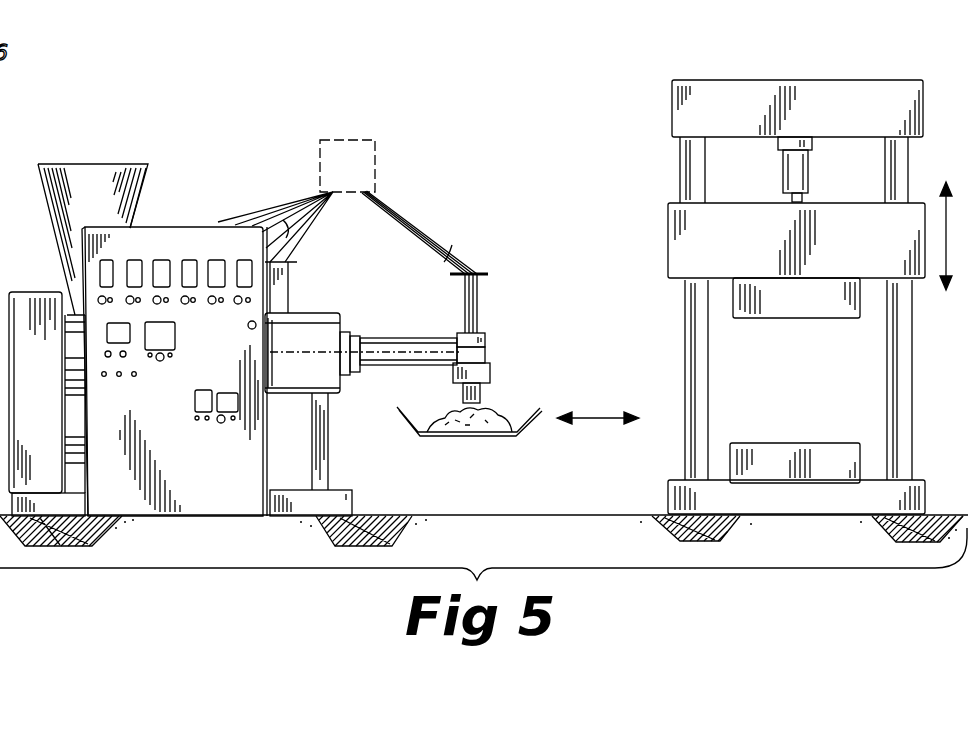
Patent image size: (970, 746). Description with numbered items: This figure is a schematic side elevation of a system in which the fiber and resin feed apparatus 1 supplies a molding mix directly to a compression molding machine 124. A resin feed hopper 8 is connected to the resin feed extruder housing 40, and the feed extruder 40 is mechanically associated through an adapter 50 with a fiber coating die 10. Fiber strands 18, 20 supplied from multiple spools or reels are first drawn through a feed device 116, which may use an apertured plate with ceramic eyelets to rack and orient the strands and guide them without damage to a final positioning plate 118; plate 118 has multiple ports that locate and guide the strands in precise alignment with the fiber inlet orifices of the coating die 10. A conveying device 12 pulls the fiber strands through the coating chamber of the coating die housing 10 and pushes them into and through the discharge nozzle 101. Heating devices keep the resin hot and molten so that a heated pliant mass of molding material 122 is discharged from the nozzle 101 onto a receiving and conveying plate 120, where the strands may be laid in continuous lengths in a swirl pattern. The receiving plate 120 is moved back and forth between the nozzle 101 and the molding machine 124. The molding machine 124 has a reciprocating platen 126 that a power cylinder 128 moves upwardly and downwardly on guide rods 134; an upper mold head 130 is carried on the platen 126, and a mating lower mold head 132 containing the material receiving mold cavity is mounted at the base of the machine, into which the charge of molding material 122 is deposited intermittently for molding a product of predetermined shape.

The fiber and resin feed apparatus 1 is at (197, 184).
The resin feed hopper 8 is at (100, 162).
The fiber coating die 10 is at (500, 340).
The conveying device 12 is at (503, 367).
The fiber strands 18 is at (277, 204).
The fiber strands 20 is at (292, 234).
The resin feed extruder housing 40 is at (317, 312).
The adapter 50 is at (390, 340).
The discharge nozzle 101 is at (490, 382).
The feed device 116 is at (343, 138).
The final positioning plate 118 is at (484, 273).
The receiving and conveying plate 120 is at (427, 438).
The molding material 122 is at (444, 416).
The compression molding machine 124 is at (702, 68).
The reciprocating platen 126 is at (668, 220).
The power cylinder 128 is at (783, 173).
The upper mold head 130 is at (808, 320).
The lower mold head 132 is at (787, 407).
The guide rods 134 is at (690, 333).